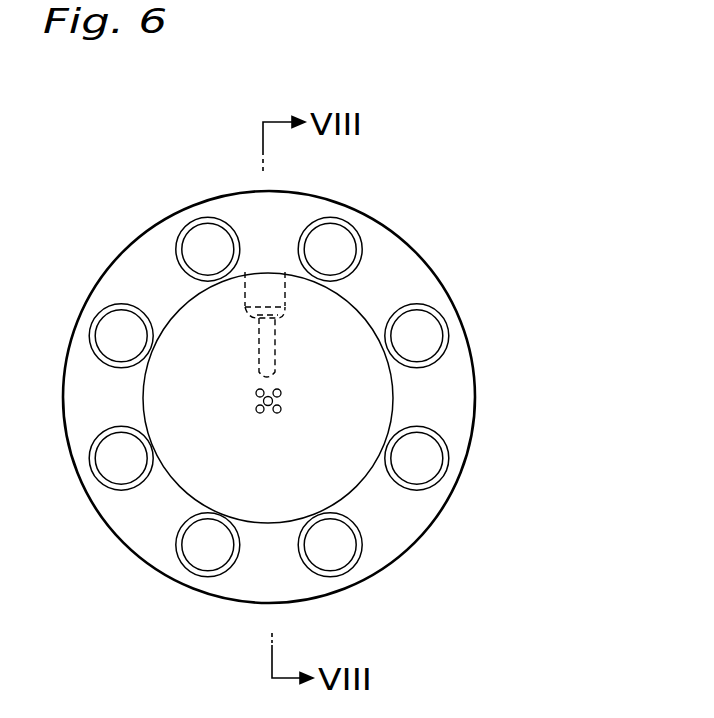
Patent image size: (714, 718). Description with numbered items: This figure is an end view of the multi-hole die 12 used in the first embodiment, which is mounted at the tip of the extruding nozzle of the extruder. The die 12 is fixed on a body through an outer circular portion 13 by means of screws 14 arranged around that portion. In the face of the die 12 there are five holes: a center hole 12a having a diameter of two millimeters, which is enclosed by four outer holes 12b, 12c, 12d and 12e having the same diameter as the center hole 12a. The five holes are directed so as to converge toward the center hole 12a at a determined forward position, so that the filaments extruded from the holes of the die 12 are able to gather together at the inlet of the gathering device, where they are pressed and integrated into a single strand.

The multi-hole die 12 is at (348, 335).
The center hole 12a is at (268, 406).
The outer hole 12b is at (256, 409).
The outer hole 12c is at (255, 393).
The outer hole 12d is at (281, 392).
The outer hole 12e is at (281, 410).
The outer circular portion 13 is at (458, 420).
The screws 14 is at (330, 230).